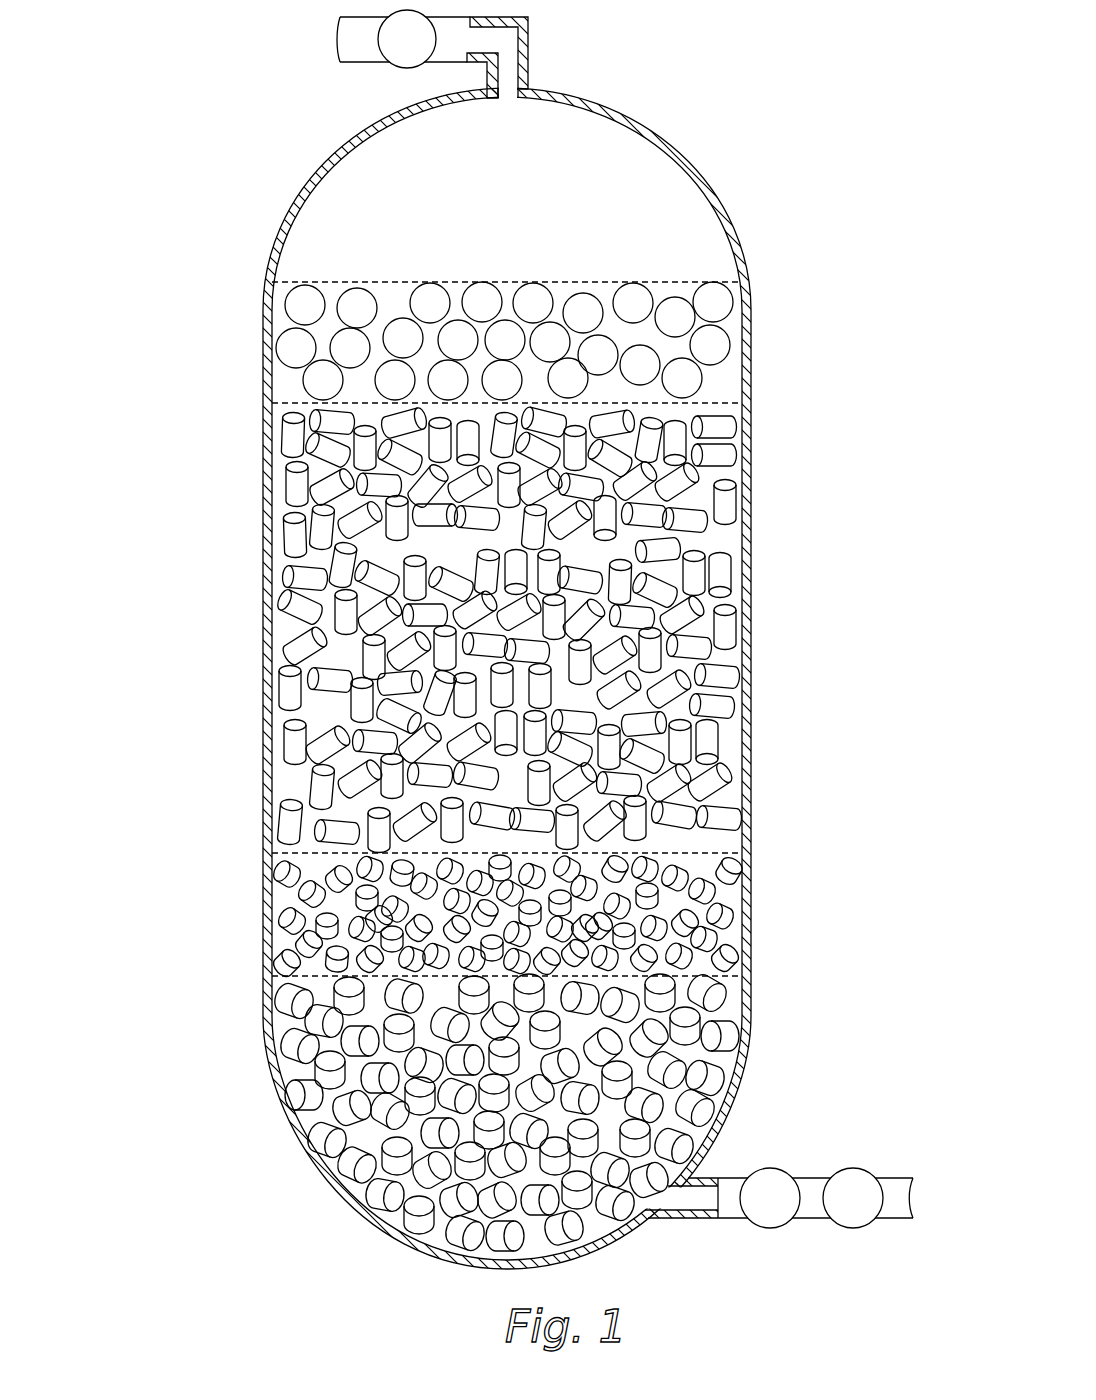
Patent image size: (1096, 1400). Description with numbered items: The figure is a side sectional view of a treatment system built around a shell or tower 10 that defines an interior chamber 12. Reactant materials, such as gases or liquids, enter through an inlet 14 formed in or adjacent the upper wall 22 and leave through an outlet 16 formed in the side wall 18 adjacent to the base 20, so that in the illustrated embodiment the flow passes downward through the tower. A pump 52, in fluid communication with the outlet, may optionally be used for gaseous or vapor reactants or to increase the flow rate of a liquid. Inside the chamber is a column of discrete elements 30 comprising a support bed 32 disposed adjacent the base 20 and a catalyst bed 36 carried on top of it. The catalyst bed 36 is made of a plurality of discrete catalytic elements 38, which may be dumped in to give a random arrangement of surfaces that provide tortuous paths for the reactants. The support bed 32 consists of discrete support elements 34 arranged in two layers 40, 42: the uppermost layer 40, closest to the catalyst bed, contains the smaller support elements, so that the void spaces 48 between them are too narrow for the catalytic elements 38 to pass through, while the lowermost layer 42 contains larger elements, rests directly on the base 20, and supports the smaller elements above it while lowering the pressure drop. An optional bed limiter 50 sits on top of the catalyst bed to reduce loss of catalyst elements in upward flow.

The shell or tower 10 is at (797, 131).
The interior chamber 12 is at (655, 743).
The inlet 14 is at (528, 70).
The outlet 16 is at (688, 1220).
The side wall 18 is at (549, 672).
The base 20 is at (397, 1238).
The upper wall 22 is at (607, 108).
The column of discrete elements 30 is at (850, 220).
The support bed 32 is at (120, 860).
The support elements 34 is at (723, 912).
The catalyst bed 36 is at (213, 403).
The catalytic elements 38 is at (715, 452).
The uppermost layer 40 is at (213, 860).
The lowermost layer 42 is at (213, 982).
The void spaces 48 is at (378, 921).
The bed limiter 50 is at (723, 304).
The pump 52 is at (850, 1228).